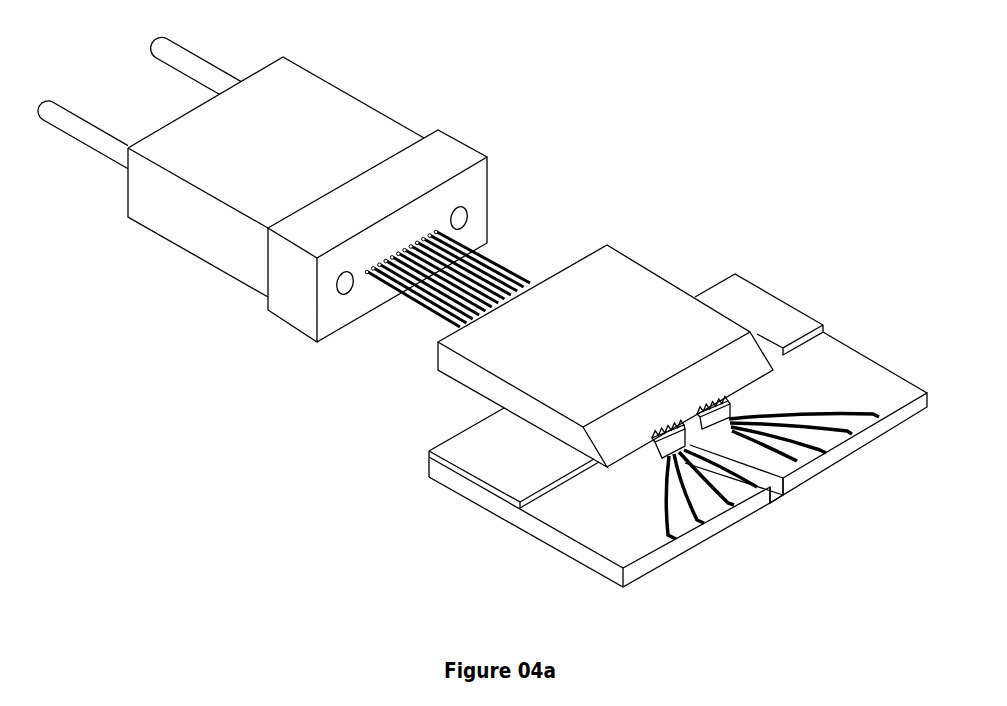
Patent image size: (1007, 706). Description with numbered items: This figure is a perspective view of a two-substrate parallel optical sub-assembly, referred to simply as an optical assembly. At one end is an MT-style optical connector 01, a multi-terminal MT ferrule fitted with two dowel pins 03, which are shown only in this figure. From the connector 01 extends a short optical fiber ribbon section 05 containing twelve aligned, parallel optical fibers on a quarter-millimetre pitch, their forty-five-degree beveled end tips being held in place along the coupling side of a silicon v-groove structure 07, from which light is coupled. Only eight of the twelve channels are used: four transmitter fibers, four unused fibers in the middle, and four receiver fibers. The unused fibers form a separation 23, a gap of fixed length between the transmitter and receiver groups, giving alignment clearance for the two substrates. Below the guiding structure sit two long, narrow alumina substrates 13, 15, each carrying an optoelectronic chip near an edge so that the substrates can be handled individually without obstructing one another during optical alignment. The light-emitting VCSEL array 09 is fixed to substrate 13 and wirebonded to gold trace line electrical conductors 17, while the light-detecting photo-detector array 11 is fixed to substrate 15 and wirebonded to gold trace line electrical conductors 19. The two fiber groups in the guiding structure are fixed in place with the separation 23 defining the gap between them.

The MT-style optical connector 01 is at (342, 115).
The dowel pins 03 is at (89, 133).
The optical fiber ribbon section 05 is at (482, 271).
The silicon v-groove structure 07 is at (608, 263).
The VCSEL array 09 is at (653, 457).
The photo-detector array 11 is at (724, 398).
The alumina substrate 13 is at (617, 540).
The alumina substrate 15 is at (870, 392).
The gold trace line electrical conductors 17 is at (700, 520).
The gold trace line electrical conductors 19 is at (820, 455).
The separation 23 is at (782, 497).